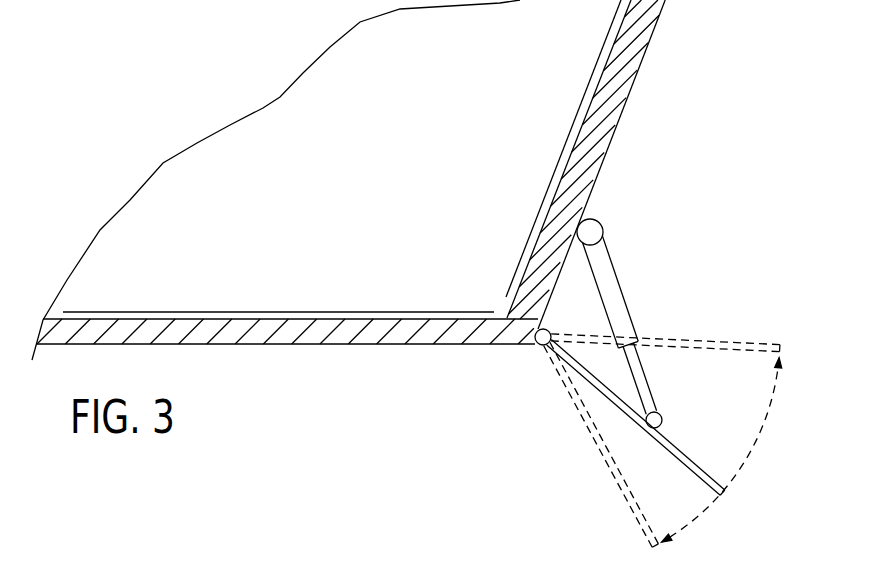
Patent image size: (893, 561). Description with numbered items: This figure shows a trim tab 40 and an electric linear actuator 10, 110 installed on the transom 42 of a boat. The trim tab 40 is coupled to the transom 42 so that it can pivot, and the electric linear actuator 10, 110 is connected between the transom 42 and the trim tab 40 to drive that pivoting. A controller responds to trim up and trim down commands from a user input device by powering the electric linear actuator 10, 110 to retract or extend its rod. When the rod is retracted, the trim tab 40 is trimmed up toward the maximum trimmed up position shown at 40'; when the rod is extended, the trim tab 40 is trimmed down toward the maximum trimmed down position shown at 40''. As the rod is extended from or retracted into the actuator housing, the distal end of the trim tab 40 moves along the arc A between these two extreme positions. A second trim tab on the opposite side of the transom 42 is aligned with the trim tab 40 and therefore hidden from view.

The transom 42 is at (622, 77).
The electric linear actuator 10 is at (622, 288).
The electric linear actuator 110 is at (633, 323).
The trim tab 40 is at (634, 412).
The maximum trimmed up position 40' is at (665, 320).
The maximum trimmed down position 40'' is at (590, 444).
The arc A is at (743, 467).